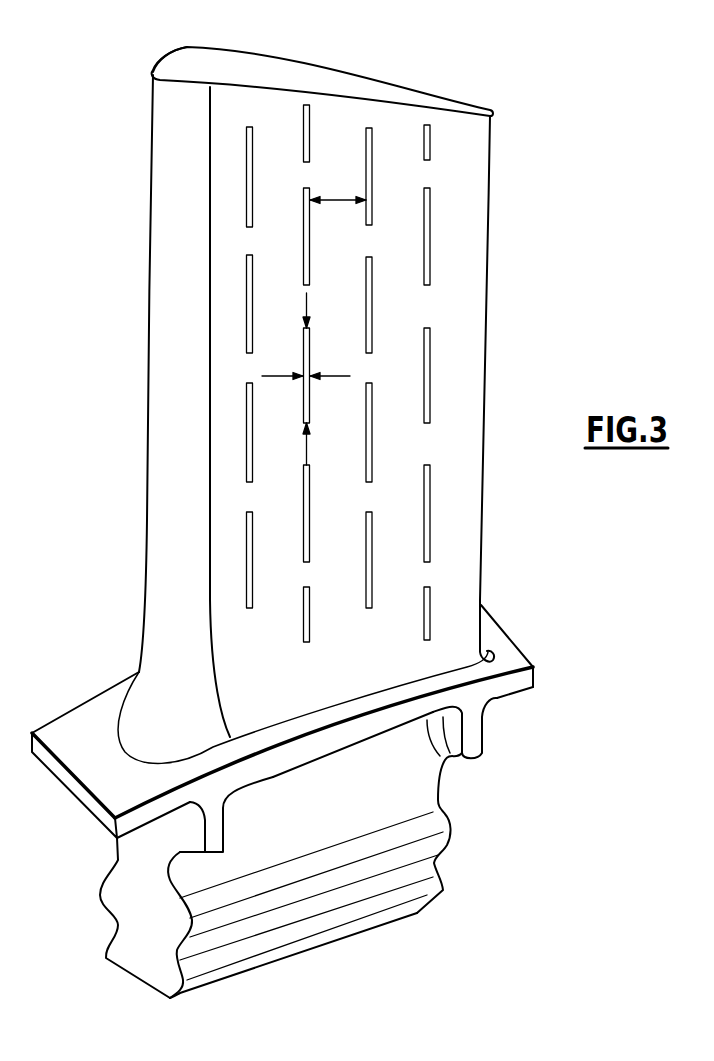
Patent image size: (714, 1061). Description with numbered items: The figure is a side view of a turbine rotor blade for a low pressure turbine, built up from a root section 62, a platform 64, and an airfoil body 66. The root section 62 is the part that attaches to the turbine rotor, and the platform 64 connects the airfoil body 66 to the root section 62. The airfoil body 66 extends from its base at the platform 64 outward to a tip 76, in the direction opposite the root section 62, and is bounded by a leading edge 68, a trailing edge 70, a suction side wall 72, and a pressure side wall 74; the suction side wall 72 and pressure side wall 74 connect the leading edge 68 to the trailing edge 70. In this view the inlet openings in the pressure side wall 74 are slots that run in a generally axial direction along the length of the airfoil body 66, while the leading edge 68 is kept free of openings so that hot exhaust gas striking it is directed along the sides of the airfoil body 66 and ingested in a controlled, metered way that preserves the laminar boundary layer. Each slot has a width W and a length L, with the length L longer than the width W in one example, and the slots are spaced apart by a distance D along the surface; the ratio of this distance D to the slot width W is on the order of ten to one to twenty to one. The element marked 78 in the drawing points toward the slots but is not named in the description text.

The root section 62 is at (437, 863).
The platform 64 is at (72, 733).
The airfoil body 66 is at (296, 537).
The leading edge 68 is at (148, 448).
The trailing edge 70 is at (482, 515).
The suction side wall 72 is at (248, 51).
The pressure side wall 74 is at (391, 128).
The tip 76 is at (196, 60).
The slot ends 78 is at (233, 275).
The distance between slots D is at (335, 200).
The slot width W is at (335, 376).
The slot length L is at (307, 453).